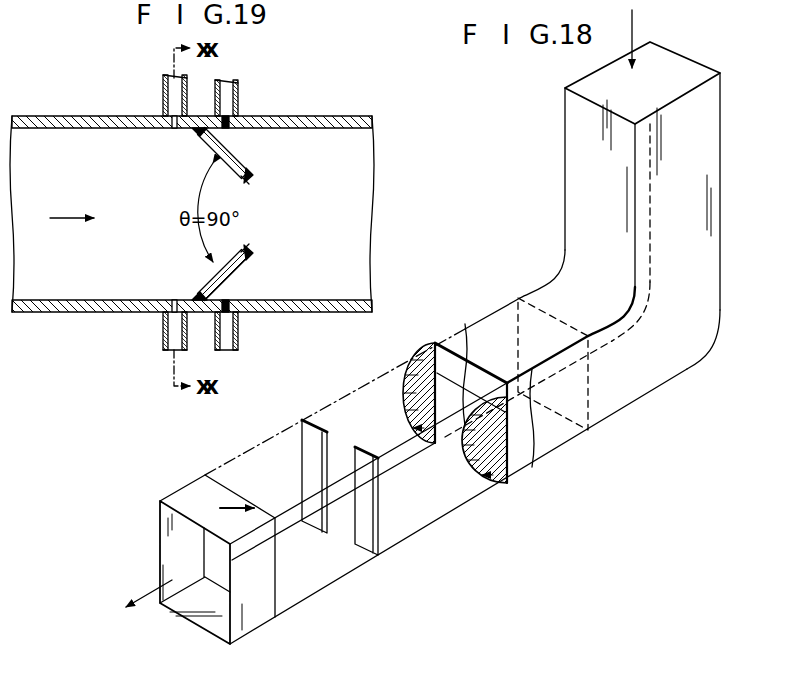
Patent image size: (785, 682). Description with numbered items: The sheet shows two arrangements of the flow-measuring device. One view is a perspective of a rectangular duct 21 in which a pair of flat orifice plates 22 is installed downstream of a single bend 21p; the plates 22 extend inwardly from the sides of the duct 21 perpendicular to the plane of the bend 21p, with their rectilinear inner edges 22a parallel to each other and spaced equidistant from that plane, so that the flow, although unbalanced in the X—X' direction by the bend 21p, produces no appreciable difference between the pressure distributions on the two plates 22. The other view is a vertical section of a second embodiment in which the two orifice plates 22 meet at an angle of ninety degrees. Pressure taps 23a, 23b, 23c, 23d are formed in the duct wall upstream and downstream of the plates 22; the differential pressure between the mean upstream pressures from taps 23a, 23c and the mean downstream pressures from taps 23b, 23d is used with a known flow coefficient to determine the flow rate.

In FIG. 19, the duct 21 is at (321, 306).
In FIG. 18, the duct 21 is at (585, 177).
In FIG. 18, the single bend 21p is at (638, 378).
In FIG. 19, the orifice plates 22 is at (236, 154).
In FIG. 18, the orifice plates 22 is at (304, 460).
In FIG. 19, the inner edges 22a is at (248, 180).
In FIG. 19, the pressure tap 23a is at (163, 100).
In FIG. 19, the pressure tap 23b is at (240, 108).
In FIG. 19, the pressure tap 23c is at (163, 330).
In FIG. 19, the pressure tap 23d is at (238, 335).